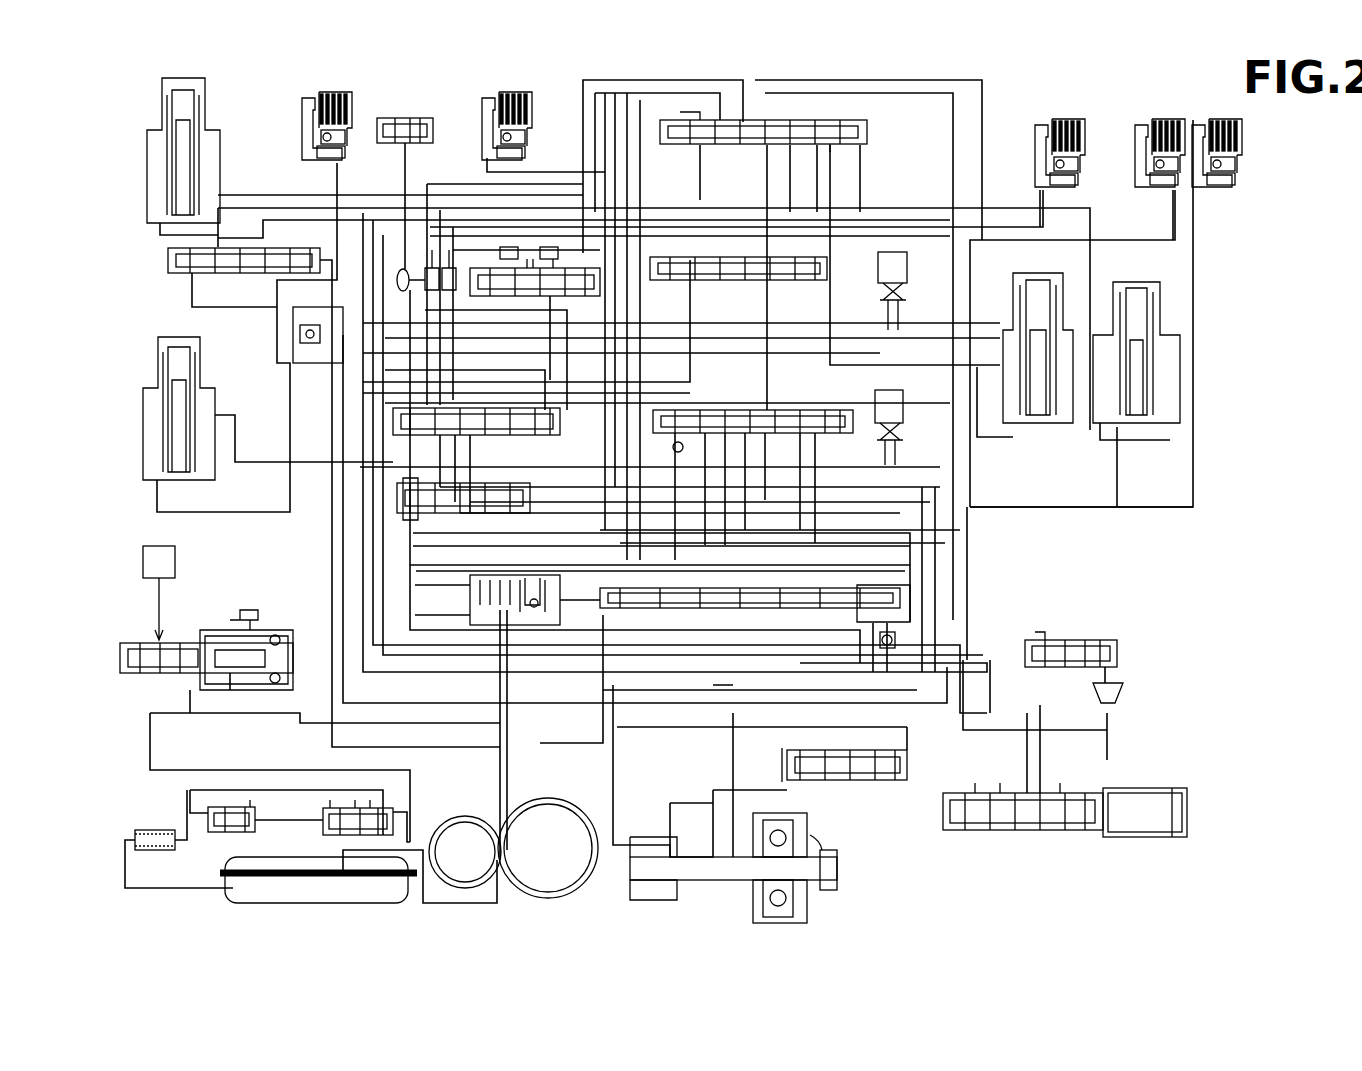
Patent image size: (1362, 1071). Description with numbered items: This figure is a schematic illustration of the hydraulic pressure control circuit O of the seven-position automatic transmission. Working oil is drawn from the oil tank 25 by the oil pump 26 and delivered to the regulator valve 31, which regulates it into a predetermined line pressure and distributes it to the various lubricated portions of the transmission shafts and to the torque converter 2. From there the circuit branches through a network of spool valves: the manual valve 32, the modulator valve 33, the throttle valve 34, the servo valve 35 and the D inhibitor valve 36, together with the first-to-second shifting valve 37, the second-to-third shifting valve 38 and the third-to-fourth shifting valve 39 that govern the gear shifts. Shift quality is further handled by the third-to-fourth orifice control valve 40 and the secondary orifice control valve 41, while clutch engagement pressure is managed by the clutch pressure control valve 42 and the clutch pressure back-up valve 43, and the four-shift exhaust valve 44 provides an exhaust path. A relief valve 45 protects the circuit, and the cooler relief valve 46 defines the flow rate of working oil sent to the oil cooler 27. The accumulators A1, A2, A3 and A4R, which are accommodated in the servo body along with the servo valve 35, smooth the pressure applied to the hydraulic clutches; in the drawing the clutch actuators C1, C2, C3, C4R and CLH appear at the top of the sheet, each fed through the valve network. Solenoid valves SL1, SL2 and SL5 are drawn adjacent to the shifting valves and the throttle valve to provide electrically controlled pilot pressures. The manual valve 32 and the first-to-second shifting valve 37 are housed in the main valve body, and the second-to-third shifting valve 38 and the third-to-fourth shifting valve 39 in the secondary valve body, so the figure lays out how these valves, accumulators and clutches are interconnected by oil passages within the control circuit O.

The torque converter 2 is at (159, 593).
The oil tank 25 is at (303, 885).
The oil pump 26 is at (545, 800).
The oil cooler 27 is at (160, 830).
The regulator valve 31 is at (259, 628).
The manual valve 32 is at (835, 580).
The modulator valve 33 is at (1078, 638).
The throttle valve 34 is at (1028, 834).
The servo valve 35 is at (850, 866).
The D inhibitor valve 36 is at (890, 785).
The 1-2 shifting valve 37 is at (752, 408).
The 2-3 shifting valve 38 is at (683, 288).
The 3-4 shifting valve 39 is at (826, 152).
The 3-4 orifice control valve 40 is at (428, 282).
The secondary orifice control valve 41 is at (183, 278).
The clutch pressure control valve 42 is at (533, 500).
The clutch pressure back-up valve 43 is at (395, 428).
The four-shift exhaust valve 44 is at (412, 126).
The relief valve 45 is at (323, 818).
The cooler relief valve 46 is at (215, 848).
The accumulator A1 is at (212, 388).
The accumulator A2 is at (215, 138).
The accumulator A3 is at (1040, 425).
The accumulator A4R is at (1147, 425).
The first clutch C1 is at (352, 135).
The second clutch C2 is at (1148, 115).
The third clutch C3 is at (1060, 115).
The fourth/reverse clutch C4R is at (1230, 115).
The low-hold clutch CLH is at (520, 95).
The first solenoid valve SL1 is at (906, 435).
The second solenoid valve SL2 is at (910, 292).
The linear solenoid valve SL5 is at (1127, 795).
The hydraulic pressure control circuit O is at (1136, 542).